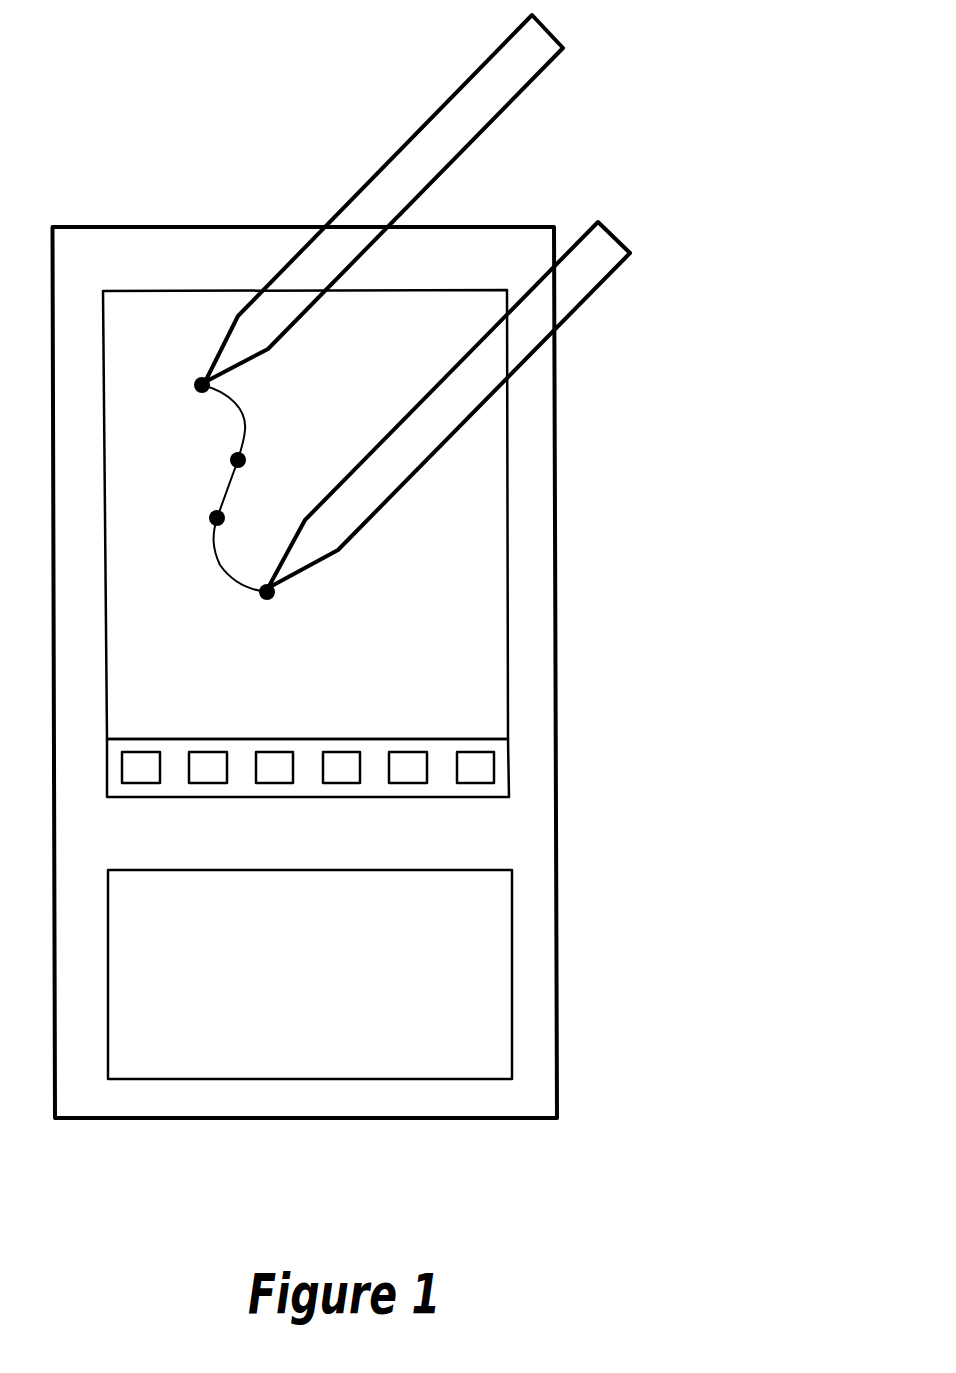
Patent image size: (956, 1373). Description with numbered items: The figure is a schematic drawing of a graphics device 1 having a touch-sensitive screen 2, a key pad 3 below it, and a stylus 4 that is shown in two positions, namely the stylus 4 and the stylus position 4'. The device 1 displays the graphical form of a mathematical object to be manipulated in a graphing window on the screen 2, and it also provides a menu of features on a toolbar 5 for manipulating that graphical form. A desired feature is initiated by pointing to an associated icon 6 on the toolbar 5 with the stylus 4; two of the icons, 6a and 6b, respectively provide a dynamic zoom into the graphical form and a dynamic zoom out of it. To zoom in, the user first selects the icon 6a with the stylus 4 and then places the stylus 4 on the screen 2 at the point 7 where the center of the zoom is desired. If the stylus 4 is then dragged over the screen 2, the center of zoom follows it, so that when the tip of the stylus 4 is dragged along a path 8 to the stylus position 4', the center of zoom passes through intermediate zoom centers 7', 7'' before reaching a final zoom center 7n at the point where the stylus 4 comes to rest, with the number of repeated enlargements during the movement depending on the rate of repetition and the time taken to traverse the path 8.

The graphics device 1 is at (627, 455).
The touch-sensitive screen 2 is at (457, 637).
The key pad 3 is at (455, 965).
The stylus 4 is at (401, 198).
The stylus position 4' is at (461, 405).
The toolbar 5 is at (443, 780).
The icon 6 is at (207, 775).
The icon 6a is at (278, 775).
The icon 6b is at (347, 775).
The point 7 is at (173, 401).
The intermediate zoom center 7' is at (193, 485).
The intermediate zoom center 7'' is at (182, 544).
The final zoom center 7n is at (260, 600).
The path 8 is at (243, 413).